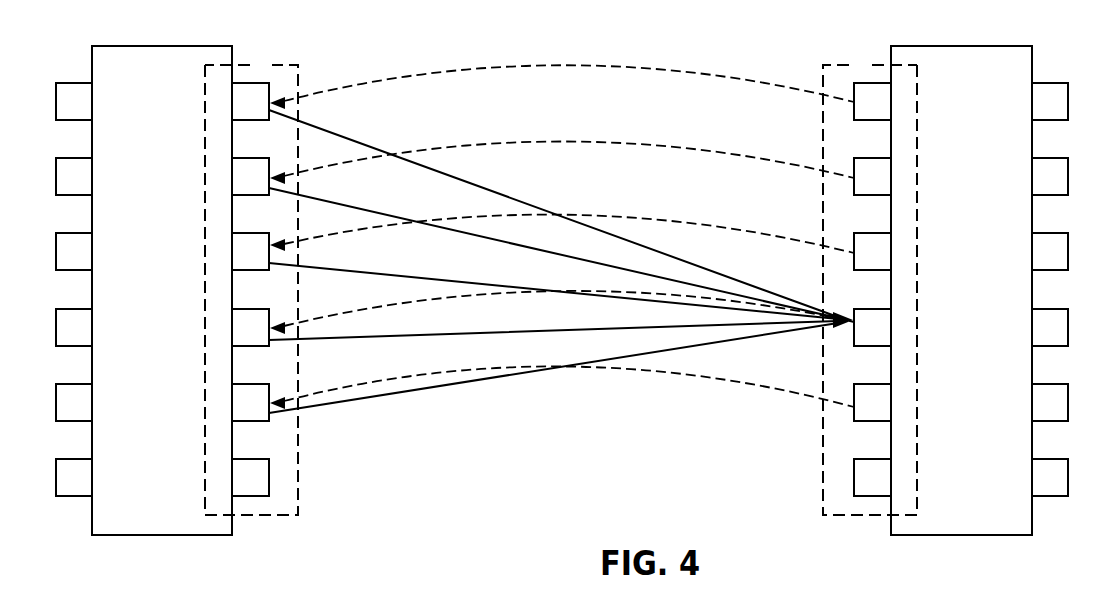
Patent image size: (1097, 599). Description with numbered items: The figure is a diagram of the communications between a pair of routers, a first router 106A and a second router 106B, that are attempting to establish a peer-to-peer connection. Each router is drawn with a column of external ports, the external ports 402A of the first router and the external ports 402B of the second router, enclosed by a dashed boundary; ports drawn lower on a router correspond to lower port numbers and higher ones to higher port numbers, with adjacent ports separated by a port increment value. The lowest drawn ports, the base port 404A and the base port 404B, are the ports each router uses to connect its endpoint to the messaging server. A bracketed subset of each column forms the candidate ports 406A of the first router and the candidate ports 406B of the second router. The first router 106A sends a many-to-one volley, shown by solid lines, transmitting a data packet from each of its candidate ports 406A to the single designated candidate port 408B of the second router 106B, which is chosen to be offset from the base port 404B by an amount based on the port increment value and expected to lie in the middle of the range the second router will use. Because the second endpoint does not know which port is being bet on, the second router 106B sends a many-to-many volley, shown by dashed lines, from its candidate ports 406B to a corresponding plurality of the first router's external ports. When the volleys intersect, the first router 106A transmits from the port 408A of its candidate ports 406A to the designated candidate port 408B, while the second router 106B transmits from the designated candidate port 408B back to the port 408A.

The first router 106A is at (219, 291).
The second router 106B is at (910, 290).
The external ports 402A is at (269, 67).
The external ports 402B is at (853, 65).
The base port 404A is at (252, 487).
The base port 404B is at (862, 488).
The candidate ports 406A is at (239, 253).
The candidate ports 406B is at (880, 253).
The port 408A is at (298, 312).
The designated candidate port 408B is at (866, 318).